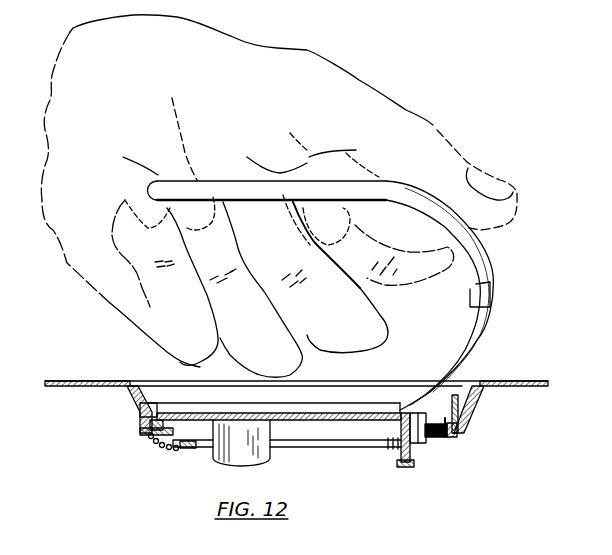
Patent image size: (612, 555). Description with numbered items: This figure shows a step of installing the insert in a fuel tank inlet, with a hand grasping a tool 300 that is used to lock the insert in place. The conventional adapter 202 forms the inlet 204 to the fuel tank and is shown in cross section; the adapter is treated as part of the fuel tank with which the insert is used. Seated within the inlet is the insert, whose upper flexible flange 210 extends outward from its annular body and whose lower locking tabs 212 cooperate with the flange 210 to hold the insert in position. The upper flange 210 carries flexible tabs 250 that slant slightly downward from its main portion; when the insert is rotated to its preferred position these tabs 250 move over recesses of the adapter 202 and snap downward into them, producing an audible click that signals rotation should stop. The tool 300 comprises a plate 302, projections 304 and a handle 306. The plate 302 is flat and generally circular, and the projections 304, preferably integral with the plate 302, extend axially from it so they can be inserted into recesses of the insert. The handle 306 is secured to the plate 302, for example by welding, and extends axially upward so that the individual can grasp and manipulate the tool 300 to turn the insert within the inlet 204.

The adapter 202 is at (130, 397).
The inlet 204 is at (173, 425).
The upper flexible flange 210 is at (154, 417).
The lower locking tabs 212 is at (153, 438).
The flexible tabs 250 is at (432, 432).
The tool 300 is at (496, 268).
The plate 302 is at (192, 425).
The projections 304 is at (262, 455).
The handle 306 is at (223, 181).